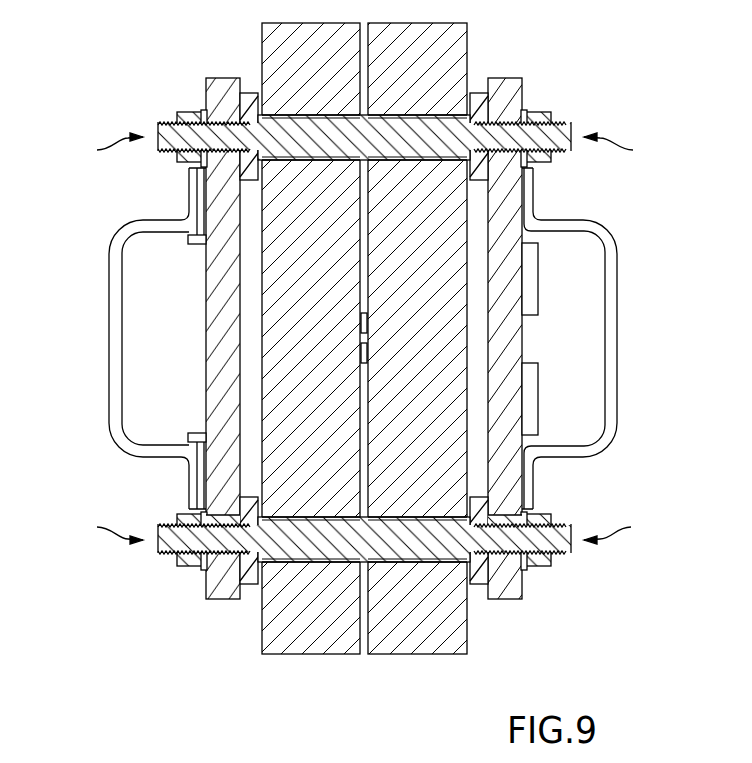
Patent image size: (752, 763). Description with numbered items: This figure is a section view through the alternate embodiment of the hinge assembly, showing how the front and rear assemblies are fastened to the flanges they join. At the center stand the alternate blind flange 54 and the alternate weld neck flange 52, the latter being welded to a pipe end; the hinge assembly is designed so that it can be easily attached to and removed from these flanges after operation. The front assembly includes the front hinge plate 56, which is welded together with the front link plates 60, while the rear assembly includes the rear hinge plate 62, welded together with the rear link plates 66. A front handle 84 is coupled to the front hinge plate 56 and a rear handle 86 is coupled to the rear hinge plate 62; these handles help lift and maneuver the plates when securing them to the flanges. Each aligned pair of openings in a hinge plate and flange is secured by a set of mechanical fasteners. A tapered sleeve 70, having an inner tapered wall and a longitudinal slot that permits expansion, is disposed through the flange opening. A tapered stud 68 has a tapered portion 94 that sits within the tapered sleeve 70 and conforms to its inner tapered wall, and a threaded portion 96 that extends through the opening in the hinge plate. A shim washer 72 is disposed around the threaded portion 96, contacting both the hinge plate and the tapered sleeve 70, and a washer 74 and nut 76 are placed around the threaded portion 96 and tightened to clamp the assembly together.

The alternate weld neck flange 52 is at (467, 40).
The alternate blind flange 54 is at (262, 40).
The front hinge plate 56 is at (213, 78).
The front link plates 60 is at (196, 246).
The rear hinge plate 62 is at (513, 78).
The rear link plates 66 is at (540, 292).
The tapered stud 68 is at (365, 338).
The tapered sleeve 70 is at (287, 113).
The shim washer 72 is at (250, 93).
The washer 74 is at (203, 110).
The nut 76 is at (177, 118).
The front handle 84 is at (109, 306).
The rear handle 86 is at (619, 306).
The tapered portion 94 is at (280, 152).
The threaded portion 96 is at (165, 155).